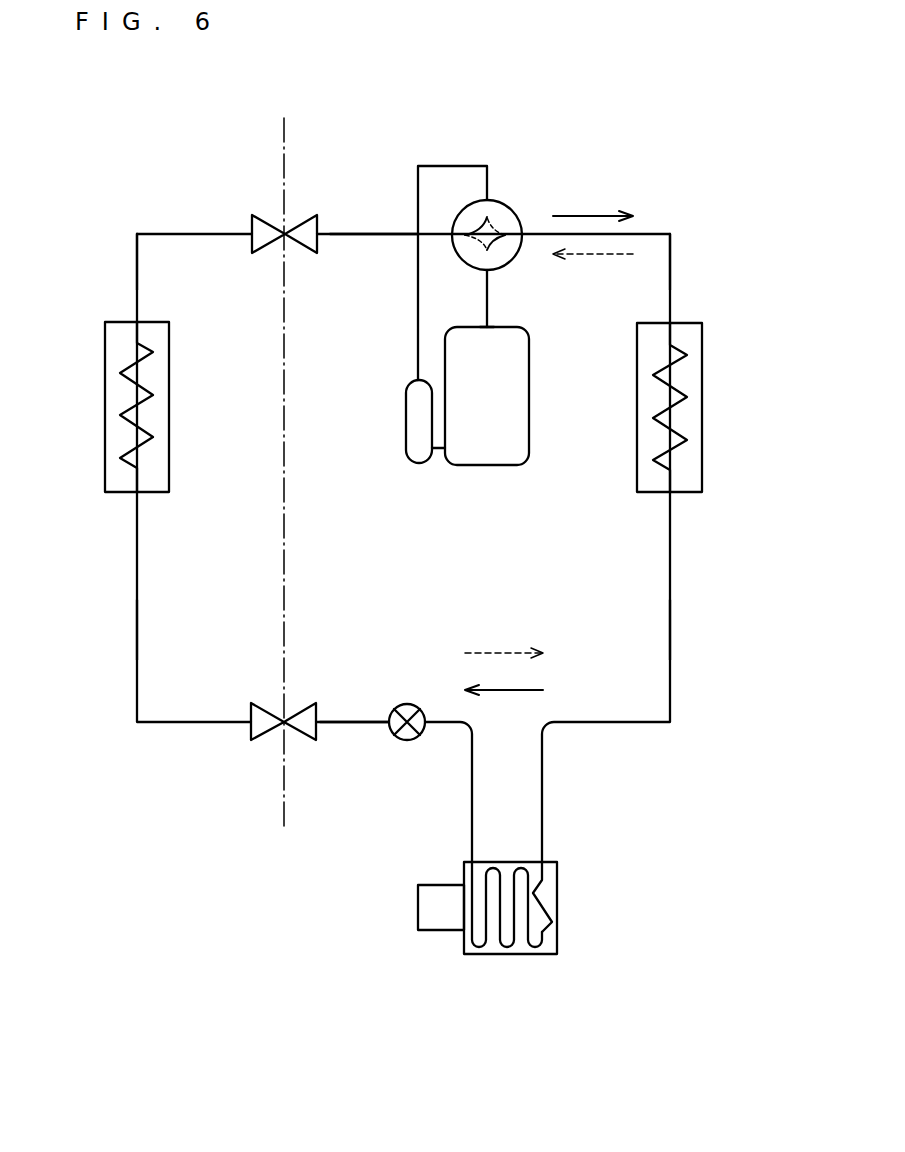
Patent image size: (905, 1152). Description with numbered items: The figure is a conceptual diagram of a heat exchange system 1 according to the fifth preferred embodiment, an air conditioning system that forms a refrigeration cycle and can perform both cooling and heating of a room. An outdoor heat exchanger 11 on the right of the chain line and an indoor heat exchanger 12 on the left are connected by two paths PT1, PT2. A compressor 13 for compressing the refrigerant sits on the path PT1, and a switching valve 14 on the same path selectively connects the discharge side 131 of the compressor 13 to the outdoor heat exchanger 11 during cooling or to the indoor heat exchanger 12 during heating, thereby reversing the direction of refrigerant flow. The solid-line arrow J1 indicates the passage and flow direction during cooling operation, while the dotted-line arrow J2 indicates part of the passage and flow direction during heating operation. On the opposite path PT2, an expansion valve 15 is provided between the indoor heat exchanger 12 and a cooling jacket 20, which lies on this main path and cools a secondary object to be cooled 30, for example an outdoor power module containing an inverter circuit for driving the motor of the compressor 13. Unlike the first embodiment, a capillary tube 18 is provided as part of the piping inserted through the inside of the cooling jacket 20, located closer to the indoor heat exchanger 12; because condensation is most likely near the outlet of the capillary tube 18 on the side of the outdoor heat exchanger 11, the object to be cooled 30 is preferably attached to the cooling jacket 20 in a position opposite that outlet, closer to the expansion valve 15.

The heat exchange system 1 is at (178, 152).
The outdoor heat exchanger 11 is at (702, 407).
The indoor heat exchanger 12 is at (105, 407).
The compressor 13 is at (529, 448).
The discharge side 131 is at (498, 321).
The switching valve 14 is at (507, 202).
The expansion valve 15 is at (407, 741).
The capillary tube 18 is at (545, 888).
The cooling jacket 20 is at (505, 955).
The object to be cooled 30 is at (418, 908).
The path PT1 is at (137, 275).
The path PT2 is at (137, 627).
The arrow J1 is at (549, 442).
The arrow J2 is at (549, 453).